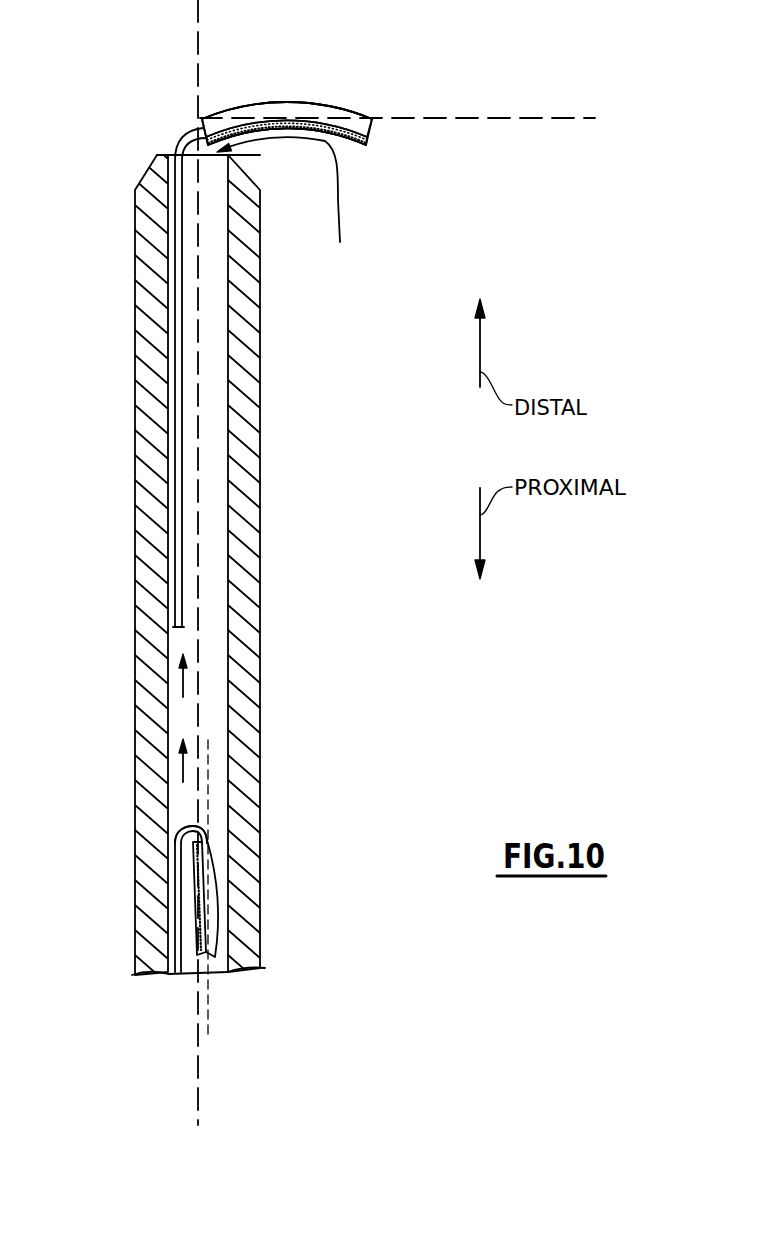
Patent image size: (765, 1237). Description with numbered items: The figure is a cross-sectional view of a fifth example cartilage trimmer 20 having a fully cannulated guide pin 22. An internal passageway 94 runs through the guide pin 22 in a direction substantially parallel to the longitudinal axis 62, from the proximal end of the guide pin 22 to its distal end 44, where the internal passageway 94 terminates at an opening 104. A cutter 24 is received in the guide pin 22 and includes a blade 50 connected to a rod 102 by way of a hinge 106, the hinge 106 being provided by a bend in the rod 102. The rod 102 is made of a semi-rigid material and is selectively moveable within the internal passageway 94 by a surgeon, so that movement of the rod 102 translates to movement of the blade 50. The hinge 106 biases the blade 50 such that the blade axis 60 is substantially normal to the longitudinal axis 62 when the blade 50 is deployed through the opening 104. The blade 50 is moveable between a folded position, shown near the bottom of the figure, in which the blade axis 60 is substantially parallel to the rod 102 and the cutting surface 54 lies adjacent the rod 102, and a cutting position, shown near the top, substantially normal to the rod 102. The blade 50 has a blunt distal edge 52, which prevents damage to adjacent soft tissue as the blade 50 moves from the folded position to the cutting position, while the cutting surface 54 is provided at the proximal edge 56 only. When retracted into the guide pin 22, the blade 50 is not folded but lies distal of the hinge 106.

The cartilage trimmer 20 is at (432, 715).
The guide pin 22 is at (262, 690).
The cutter 24 is at (358, 88).
The distal end 44 is at (168, 152).
The blade 50 is at (287, 109).
The distal edge 52 is at (262, 101).
The cutting surface 54 is at (352, 138).
The proximal edge 56 is at (337, 140).
The blade axis 60 is at (494, 118).
The longitudinal axis 62 is at (200, 1065).
The internal passageway 94 is at (172, 732).
The rod 102 is at (180, 398).
The opening 104 is at (340, 242).
The hinge 106 is at (204, 832).